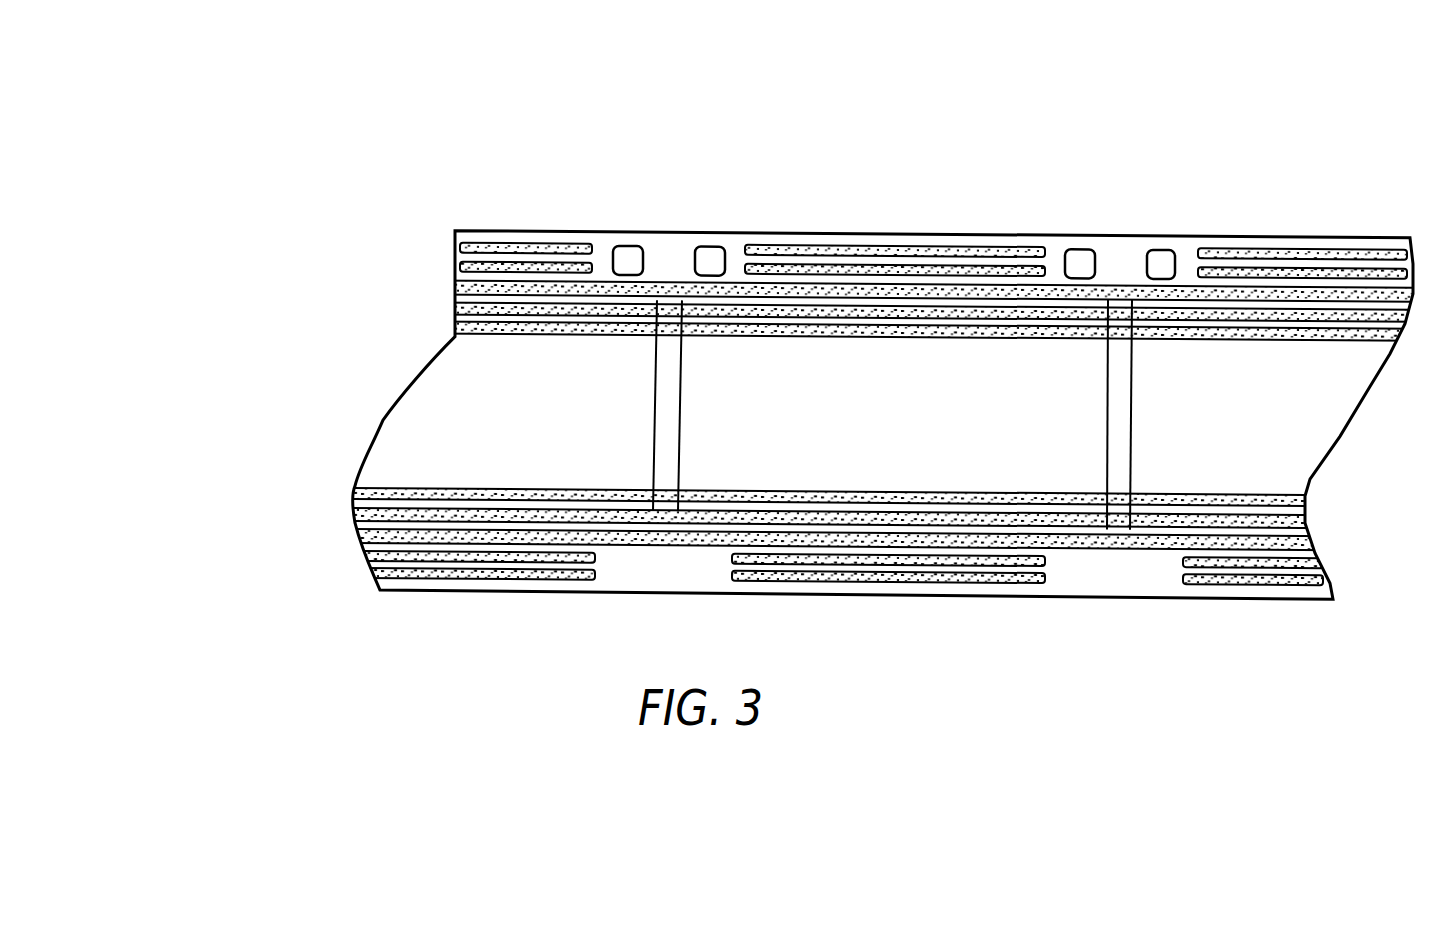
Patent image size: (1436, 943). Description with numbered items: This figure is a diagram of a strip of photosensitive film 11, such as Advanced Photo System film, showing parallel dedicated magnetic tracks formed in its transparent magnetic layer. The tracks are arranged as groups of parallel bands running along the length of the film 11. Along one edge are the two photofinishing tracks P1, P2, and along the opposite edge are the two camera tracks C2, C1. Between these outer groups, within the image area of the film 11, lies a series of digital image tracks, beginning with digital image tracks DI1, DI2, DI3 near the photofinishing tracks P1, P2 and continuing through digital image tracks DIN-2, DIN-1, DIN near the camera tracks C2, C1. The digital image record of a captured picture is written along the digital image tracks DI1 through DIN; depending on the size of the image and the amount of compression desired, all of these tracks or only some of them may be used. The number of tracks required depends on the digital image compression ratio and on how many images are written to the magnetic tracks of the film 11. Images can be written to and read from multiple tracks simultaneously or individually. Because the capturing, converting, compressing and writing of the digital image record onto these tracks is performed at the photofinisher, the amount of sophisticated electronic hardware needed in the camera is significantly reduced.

The photosensitive film 11 is at (687, 197).
The photofinishing track P1 is at (455, 246).
The photofinishing track P2 is at (455, 266).
The digital image track DI1 is at (455, 288).
The digital image track DI2 is at (455, 309).
The digital image track DI3 is at (455, 328).
The digital image track DIN-2 is at (350, 493).
The digital image track DIN-1 is at (350, 512).
The digital image track DIN is at (357, 535).
The camera track C2 is at (365, 558).
The camera track C1 is at (377, 573).